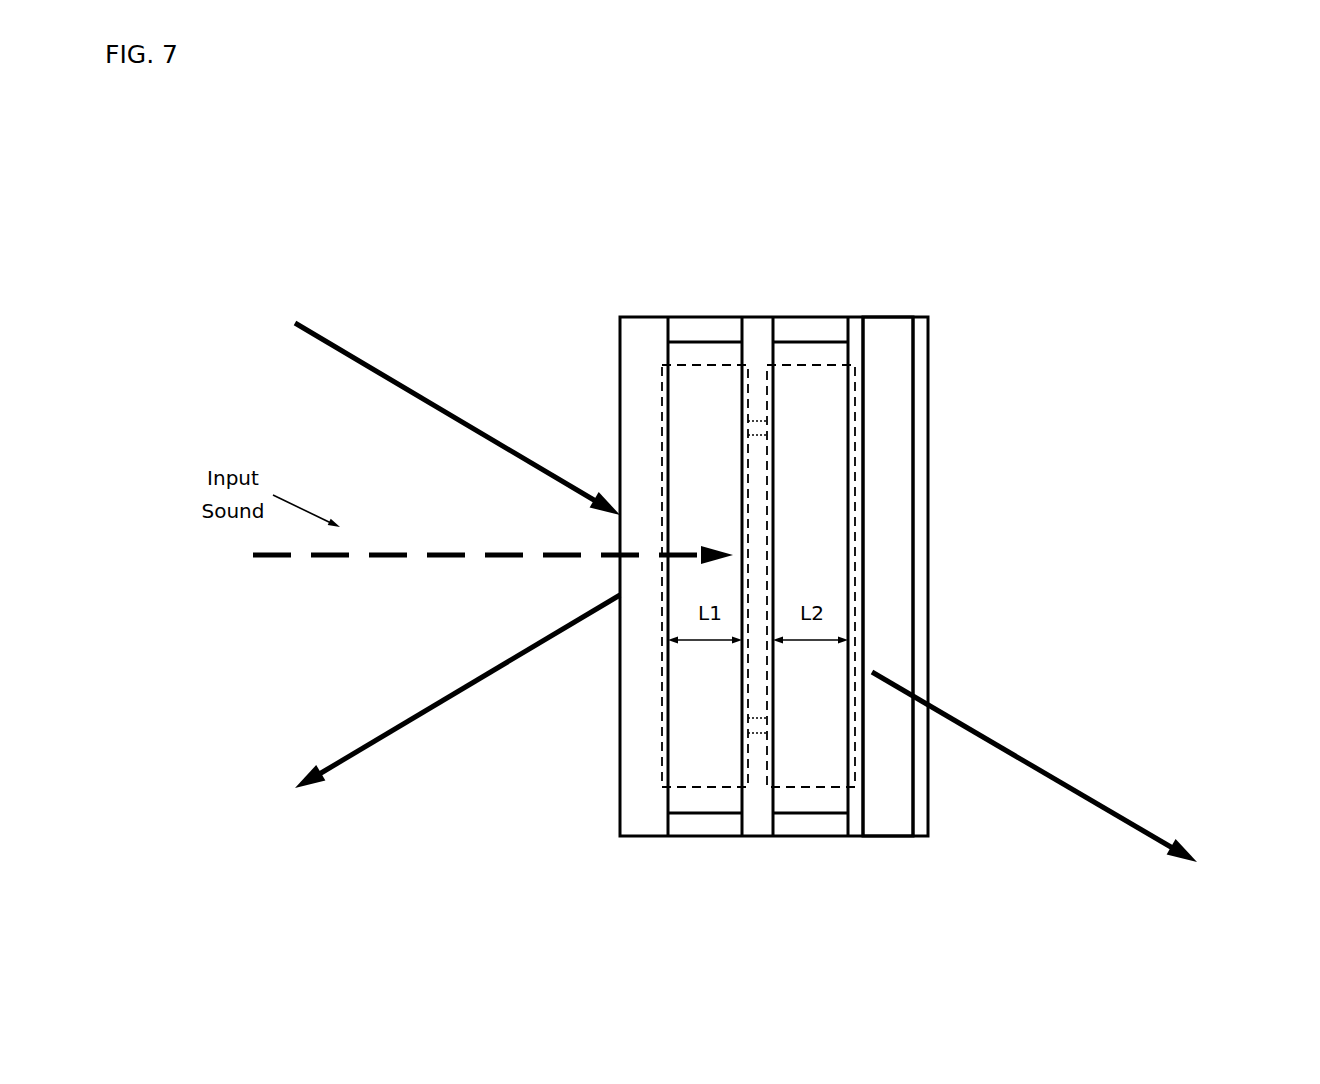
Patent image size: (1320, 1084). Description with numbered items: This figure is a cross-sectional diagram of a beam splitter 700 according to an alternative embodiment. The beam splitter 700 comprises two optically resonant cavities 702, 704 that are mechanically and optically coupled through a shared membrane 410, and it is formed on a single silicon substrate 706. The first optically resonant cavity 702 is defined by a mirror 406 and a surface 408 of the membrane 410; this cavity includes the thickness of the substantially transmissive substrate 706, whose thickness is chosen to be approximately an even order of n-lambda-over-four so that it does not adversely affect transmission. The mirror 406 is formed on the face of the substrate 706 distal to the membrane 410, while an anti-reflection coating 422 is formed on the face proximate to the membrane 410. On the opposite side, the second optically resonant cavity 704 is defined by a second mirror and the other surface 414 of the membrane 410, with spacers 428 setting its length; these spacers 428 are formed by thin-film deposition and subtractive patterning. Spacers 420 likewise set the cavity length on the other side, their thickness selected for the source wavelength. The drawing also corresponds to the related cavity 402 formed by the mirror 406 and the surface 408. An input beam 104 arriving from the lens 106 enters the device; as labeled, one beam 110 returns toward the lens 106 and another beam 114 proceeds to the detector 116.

The beam splitter 700 is at (506, 150).
The optically resonant cavity 702 is at (658, 535).
The optically resonant cavity 402 is at (852, 535).
The spacers 428 is at (692, 578).
The spacers 420 is at (795, 578).
The surface of membrane 414 is at (626, 576).
The surface of membrane 408 is at (890, 576).
The membrane 410 is at (878, 572).
The anti-reflection coating 422 is at (936, 638).
The substrate 706 is at (944, 611).
The mirror 406 is at (969, 582).
The optically resonant cavity 704 is at (570, 622).
The input beam 104 is at (411, 419).
The reflected light beam to lens 110 is at (411, 691).
The output light beam to detector 114 is at (1034, 767).
The lens 106 is at (265, 539).
The detector 116 is at (1253, 875).